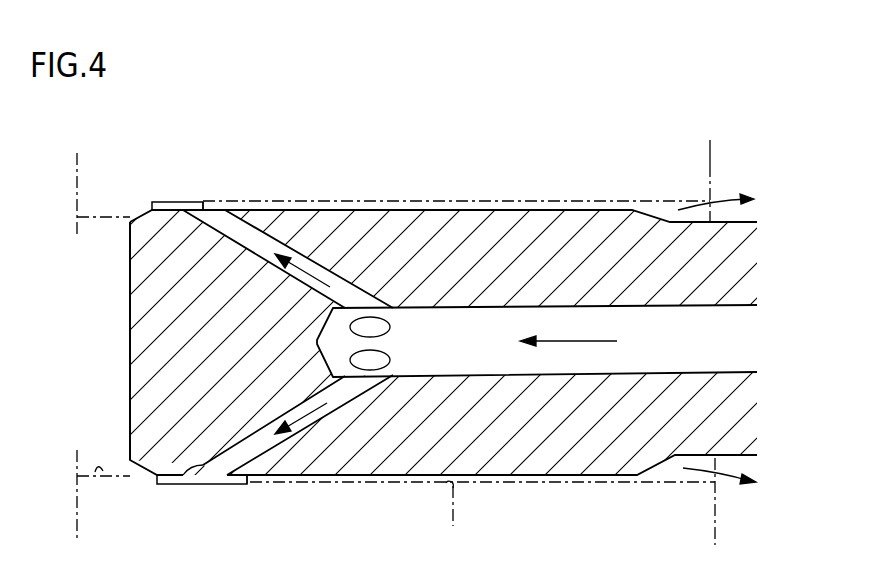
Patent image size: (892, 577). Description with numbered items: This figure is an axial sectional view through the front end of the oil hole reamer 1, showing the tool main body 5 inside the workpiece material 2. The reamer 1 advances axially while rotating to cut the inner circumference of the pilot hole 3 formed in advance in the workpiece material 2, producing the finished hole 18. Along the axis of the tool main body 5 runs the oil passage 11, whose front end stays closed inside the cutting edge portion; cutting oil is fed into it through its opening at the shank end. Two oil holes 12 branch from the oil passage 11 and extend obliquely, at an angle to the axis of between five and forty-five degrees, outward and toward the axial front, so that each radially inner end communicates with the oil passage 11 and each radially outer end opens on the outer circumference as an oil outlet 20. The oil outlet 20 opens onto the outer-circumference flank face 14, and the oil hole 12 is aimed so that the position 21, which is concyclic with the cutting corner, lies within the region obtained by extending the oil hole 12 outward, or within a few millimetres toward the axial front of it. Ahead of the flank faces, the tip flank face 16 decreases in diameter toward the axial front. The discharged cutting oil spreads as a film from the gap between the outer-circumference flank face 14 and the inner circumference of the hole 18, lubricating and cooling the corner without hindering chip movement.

The oil hole reamer 1 is at (446, 345).
The workpiece material 2 is at (710, 152).
The pilot hole 3 is at (102, 472).
The tool main body 5 is at (460, 226).
The oil passage 11 is at (733, 372).
The oil hole 12 is at (252, 232).
The outer-circumference flank face 14 is at (350, 209).
The tip flank face 16 is at (130, 222).
The hole 18 is at (452, 518).
The oil outlet 20 is at (203, 210).
The position 21 is at (152, 202).